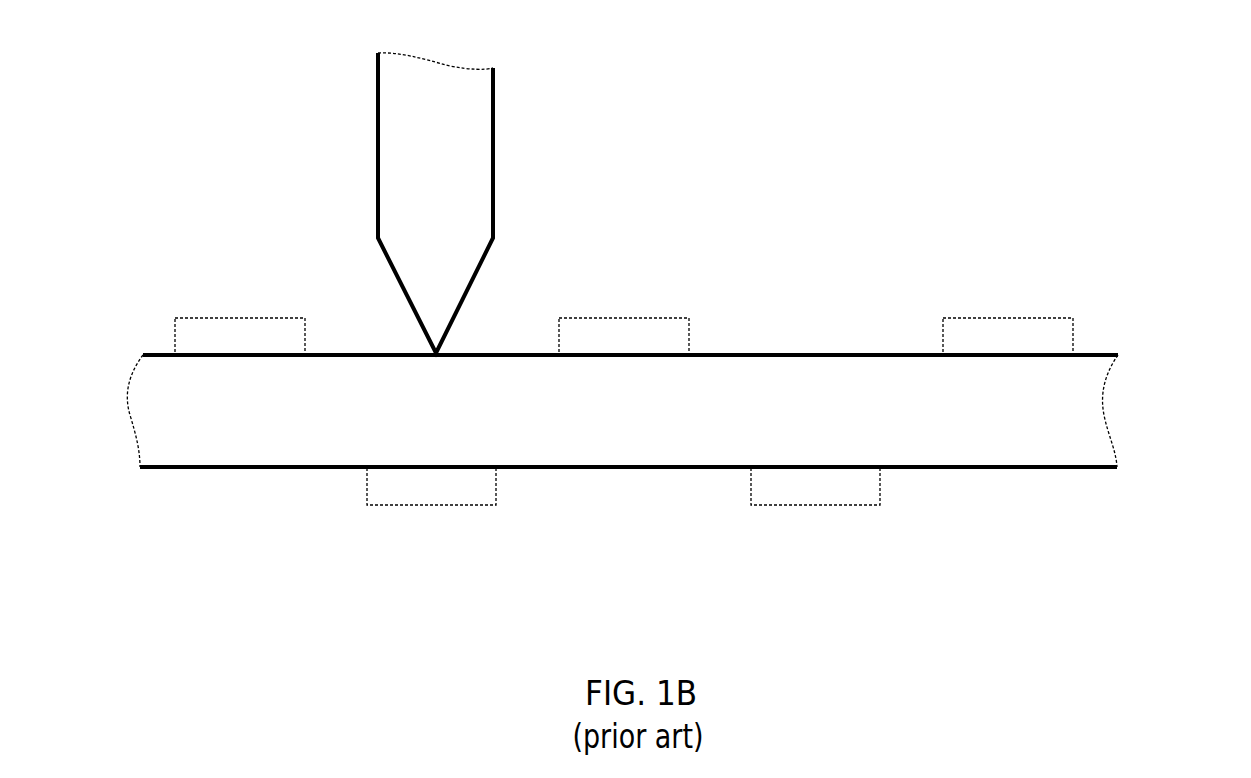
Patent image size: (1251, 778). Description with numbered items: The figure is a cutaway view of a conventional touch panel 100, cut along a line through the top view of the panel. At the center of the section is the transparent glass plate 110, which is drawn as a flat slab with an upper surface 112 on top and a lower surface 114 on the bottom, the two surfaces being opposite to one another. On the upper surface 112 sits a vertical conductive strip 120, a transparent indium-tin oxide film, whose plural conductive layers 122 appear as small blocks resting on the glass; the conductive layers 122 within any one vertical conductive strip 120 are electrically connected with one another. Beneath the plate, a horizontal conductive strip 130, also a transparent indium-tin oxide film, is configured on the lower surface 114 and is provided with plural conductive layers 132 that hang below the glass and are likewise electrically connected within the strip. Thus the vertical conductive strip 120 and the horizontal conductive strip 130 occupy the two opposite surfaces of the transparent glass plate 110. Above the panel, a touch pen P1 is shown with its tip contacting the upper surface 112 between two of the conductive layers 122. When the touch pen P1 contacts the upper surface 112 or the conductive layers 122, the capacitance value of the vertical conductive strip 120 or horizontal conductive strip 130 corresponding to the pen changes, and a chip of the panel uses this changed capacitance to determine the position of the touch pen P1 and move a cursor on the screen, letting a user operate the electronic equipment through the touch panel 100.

The touch panel 100 is at (1100, 143).
The transparent glass plate 110 is at (1094, 397).
The upper surface 112 is at (820, 350).
The lower surface 114 is at (640, 470).
The vertical conductive strip 120 is at (1100, 341).
The conductive layer 122 is at (236, 328).
The horizontal conductive strip 130 is at (930, 483).
The conductive layer 132 is at (437, 495).
The touch pen P1 is at (476, 137).